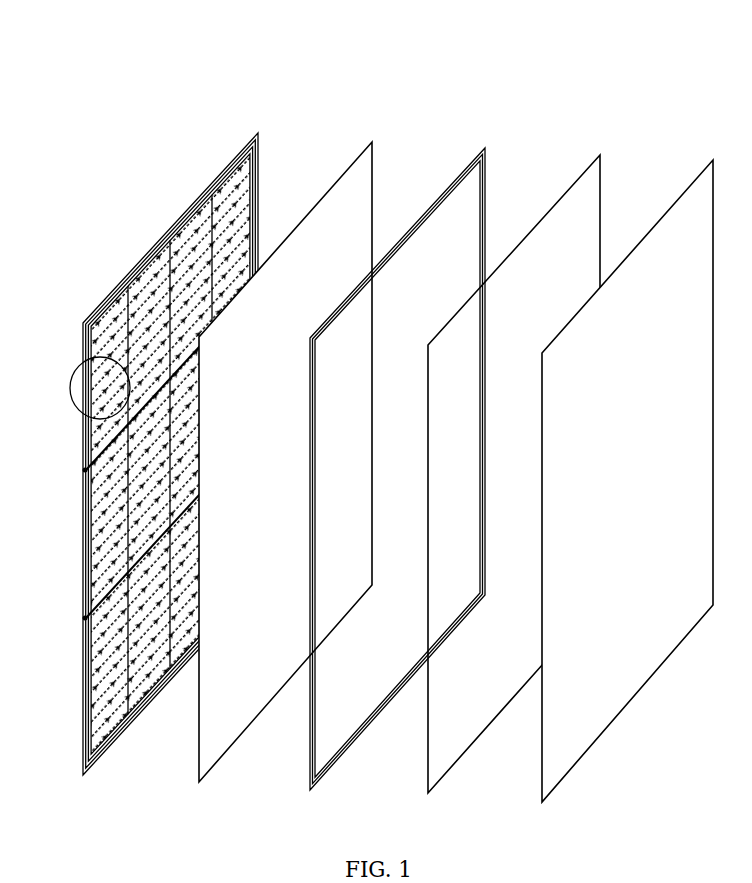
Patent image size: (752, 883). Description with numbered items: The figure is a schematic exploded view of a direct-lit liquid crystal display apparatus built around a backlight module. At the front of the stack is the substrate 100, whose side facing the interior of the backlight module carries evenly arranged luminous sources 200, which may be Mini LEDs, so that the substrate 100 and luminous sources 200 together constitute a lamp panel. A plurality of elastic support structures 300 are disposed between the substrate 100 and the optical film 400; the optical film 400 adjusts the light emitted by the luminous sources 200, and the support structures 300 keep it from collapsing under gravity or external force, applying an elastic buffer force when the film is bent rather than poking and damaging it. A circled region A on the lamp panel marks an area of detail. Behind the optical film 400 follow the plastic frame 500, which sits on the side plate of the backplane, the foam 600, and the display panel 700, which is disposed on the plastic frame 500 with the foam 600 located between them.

The substrate 100 is at (232, 157).
The luminous source 200 is at (106, 305).
The support structure 300 is at (148, 255).
The detail region A is at (72, 390).
The optical film 400 is at (360, 175).
The plastic frame 500 is at (483, 148).
The foam 600 is at (588, 160).
The display panel 700 is at (705, 218).